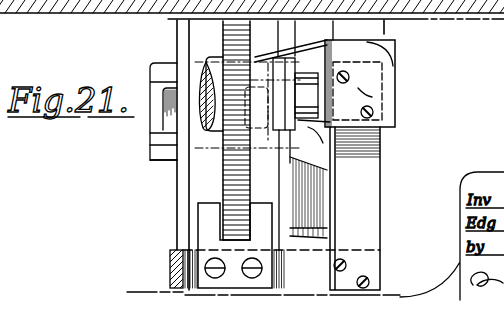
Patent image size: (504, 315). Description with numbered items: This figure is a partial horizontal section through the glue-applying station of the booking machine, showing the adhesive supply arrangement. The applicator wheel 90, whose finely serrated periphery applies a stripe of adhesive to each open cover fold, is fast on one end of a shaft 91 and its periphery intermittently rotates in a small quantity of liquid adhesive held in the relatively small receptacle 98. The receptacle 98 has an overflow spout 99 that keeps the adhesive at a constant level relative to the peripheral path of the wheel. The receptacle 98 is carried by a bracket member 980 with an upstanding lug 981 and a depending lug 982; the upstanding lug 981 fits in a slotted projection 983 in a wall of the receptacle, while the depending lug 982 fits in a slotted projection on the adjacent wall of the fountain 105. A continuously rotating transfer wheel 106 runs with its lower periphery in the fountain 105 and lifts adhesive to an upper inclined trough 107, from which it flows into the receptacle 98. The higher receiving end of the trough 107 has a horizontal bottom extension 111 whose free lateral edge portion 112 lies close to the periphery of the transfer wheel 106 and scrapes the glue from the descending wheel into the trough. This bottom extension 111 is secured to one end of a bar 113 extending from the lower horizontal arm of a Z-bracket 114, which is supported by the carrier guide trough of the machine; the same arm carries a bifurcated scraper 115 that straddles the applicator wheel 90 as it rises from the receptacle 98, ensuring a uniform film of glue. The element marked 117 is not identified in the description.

The receptacle 98 is at (176, 37).
The slotted projection 983 is at (157, 67).
The upstanding lug 981 is at (165, 97).
The bracket member 980 is at (161, 153).
The shaft 91 is at (205, 105).
The applicator wheel 90 is at (221, 178).
The bifurcated scraper 115 is at (213, 220).
The stop block 117 is at (170, 268).
The depending lug 982 is at (285, 148).
The inclined trough 107 is at (308, 123).
The transfer wheel 106 is at (385, 32).
The free lateral edge portion 112 is at (367, 42).
The horizontal bottom extension 111 is at (393, 98).
The bar 113 is at (372, 143).
The fountain 105 is at (397, 208).
The overflow spout 99 is at (318, 203).
The Z-bracket 114 is at (355, 253).